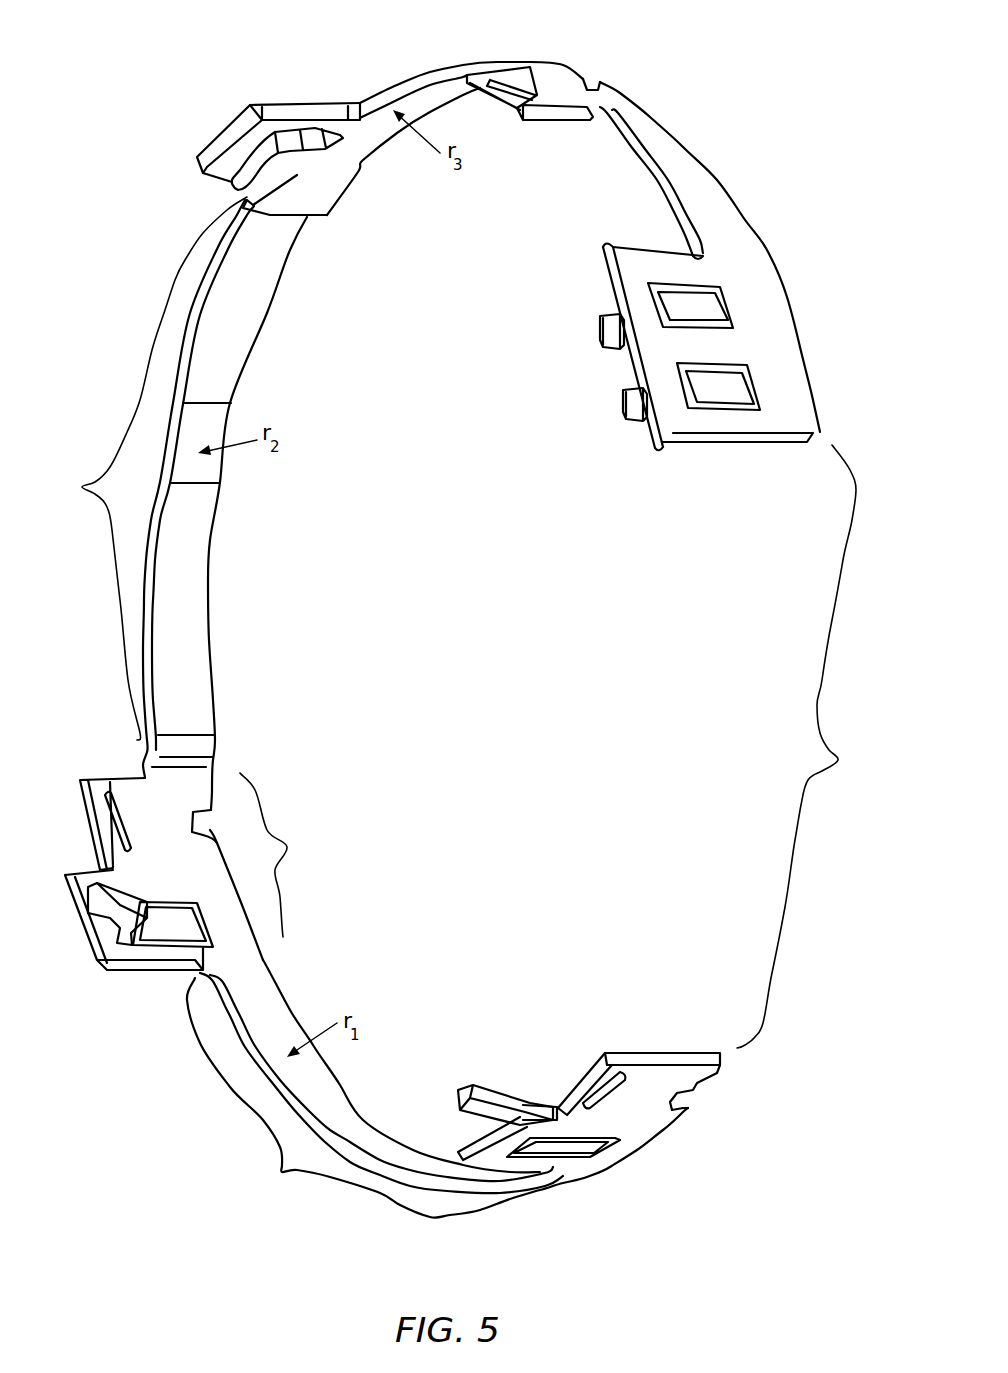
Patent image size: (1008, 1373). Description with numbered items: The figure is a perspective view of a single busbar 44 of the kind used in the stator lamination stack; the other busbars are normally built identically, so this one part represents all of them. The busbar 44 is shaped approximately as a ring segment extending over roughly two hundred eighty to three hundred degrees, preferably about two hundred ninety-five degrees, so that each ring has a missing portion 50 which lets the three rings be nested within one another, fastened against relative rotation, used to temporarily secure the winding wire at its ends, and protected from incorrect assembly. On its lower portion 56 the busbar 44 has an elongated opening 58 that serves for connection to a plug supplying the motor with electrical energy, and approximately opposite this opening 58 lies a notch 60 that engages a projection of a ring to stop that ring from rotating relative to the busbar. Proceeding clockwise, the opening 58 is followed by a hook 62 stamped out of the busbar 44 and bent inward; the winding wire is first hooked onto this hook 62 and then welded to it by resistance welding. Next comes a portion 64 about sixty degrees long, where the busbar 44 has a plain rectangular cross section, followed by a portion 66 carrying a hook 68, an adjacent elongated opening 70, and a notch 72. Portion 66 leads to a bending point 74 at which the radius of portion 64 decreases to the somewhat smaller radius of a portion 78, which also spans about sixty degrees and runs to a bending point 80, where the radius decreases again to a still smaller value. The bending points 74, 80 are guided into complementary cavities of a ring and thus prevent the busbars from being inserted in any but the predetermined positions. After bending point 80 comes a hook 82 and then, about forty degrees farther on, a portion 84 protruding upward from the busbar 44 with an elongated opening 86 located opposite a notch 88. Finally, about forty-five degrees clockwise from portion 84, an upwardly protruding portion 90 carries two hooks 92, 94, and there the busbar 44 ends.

The busbar 44 is at (188, 583).
The missing portion 50 is at (808, 746).
The lower portion 56 is at (666, 1035).
The elongated opening 58 is at (588, 1074).
The notch 60 is at (707, 1097).
The hook 62 is at (482, 1087).
The portion 64 is at (437, 1089).
The portion 66 is at (290, 848).
The hook 68 is at (127, 903).
The elongated opening 70 is at (118, 782).
The notch 72 is at (218, 828).
The bending point 74 is at (142, 750).
The portion 78 is at (82, 487).
The bending point 80 is at (325, 195).
The hook 82 is at (230, 178).
The portion 84 is at (558, 90).
The elongated opening 86 is at (535, 85).
The notch 88 is at (607, 85).
The upwardly protruding portion 90 is at (643, 455).
The hook 92 is at (598, 327).
The hook 94 is at (620, 402).